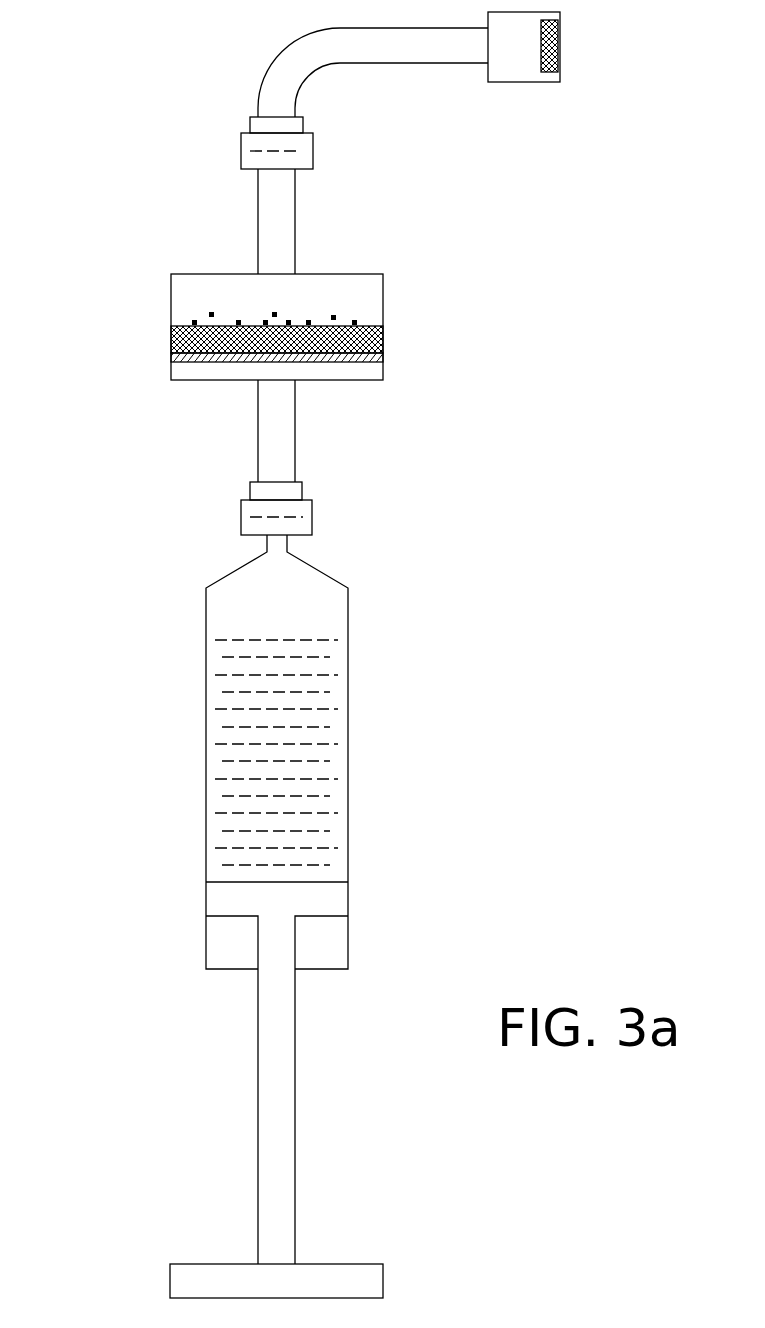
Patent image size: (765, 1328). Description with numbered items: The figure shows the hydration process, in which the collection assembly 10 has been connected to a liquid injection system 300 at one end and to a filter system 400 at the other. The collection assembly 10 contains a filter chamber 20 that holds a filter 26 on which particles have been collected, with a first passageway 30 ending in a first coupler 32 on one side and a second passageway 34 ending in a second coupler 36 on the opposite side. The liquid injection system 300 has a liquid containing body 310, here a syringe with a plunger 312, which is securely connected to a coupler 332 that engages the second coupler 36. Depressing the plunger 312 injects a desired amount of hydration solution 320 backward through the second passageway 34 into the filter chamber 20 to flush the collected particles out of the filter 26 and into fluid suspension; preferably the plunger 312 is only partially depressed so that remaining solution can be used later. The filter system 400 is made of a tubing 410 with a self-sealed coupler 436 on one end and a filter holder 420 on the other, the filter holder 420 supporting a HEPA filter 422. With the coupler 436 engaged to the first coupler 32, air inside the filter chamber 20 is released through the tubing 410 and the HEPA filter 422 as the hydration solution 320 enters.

The collection assembly 10 is at (259, 313).
The filter chamber 20 is at (182, 308).
The filter 26 is at (383, 335).
The first passageway 30 is at (267, 248).
The first coupler 32 is at (313, 160).
The second passageway 34 is at (285, 447).
The second coupler 36 is at (305, 492).
The liquid injection system 300 is at (336, 916).
The liquid containing body 310 is at (206, 686).
The plunger 312 is at (325, 903).
The hydration solution 320 is at (330, 734).
The coupler 332 is at (305, 522).
The filter system 400 is at (467, 107).
The tubing 410 is at (373, 53).
The filter holder 420 is at (582, 78).
The HEPA filter 422 is at (558, 55).
The coupler 436 is at (250, 124).